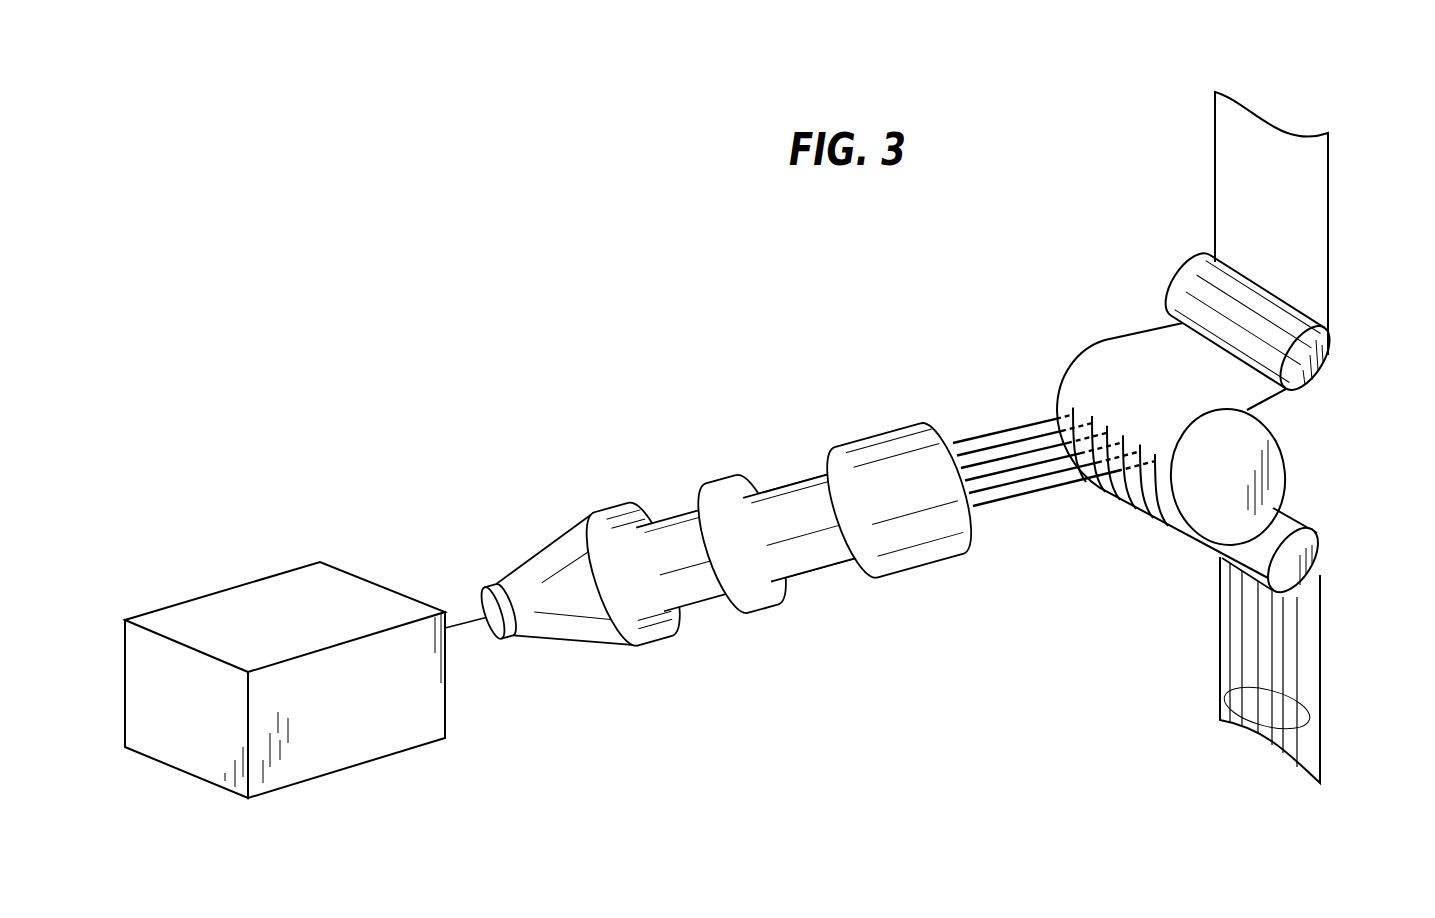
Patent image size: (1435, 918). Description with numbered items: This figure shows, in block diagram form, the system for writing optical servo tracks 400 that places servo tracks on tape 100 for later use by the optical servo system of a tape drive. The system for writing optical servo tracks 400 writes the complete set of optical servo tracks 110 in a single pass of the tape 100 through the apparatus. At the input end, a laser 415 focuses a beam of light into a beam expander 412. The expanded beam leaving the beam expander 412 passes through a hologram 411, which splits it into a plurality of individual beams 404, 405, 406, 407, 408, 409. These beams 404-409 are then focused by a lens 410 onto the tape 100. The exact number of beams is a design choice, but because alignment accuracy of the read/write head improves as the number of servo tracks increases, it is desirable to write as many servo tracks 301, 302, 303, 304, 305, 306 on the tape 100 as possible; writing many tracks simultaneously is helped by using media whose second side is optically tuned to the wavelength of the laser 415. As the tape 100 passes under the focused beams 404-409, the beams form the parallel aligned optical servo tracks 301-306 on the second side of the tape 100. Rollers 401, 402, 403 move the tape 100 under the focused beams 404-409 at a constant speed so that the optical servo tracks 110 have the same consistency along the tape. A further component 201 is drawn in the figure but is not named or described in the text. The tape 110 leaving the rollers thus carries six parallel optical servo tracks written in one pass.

The tape 100 is at (1262, 113).
The optical servo tracks 110 is at (1320, 735).
The drum 201 is at (1168, 353).
The servo track 301 is at (1082, 418).
The servo track 302 is at (1076, 414).
The servo track 303 is at (1108, 440).
The servo track 304 is at (1126, 446).
The servo track 305 is at (1145, 457).
The servo track 306 is at (1160, 466).
The system for writing optical servo tracks 400 is at (326, 328).
The roller 401 is at (1333, 353).
The roller 402 is at (1317, 545).
The roller 403 is at (1278, 462).
The individual beam 404 is at (962, 444).
The individual beam 405 is at (985, 453).
The individual beam 406 is at (1005, 463).
The individual beam 407 is at (990, 486).
The individual beam 408 is at (1037, 494).
The individual beam 409 is at (1085, 495).
The lens 410 is at (868, 440).
The hologram 411 is at (782, 483).
The beam expander 412 is at (563, 538).
The laser 415 is at (299, 598).